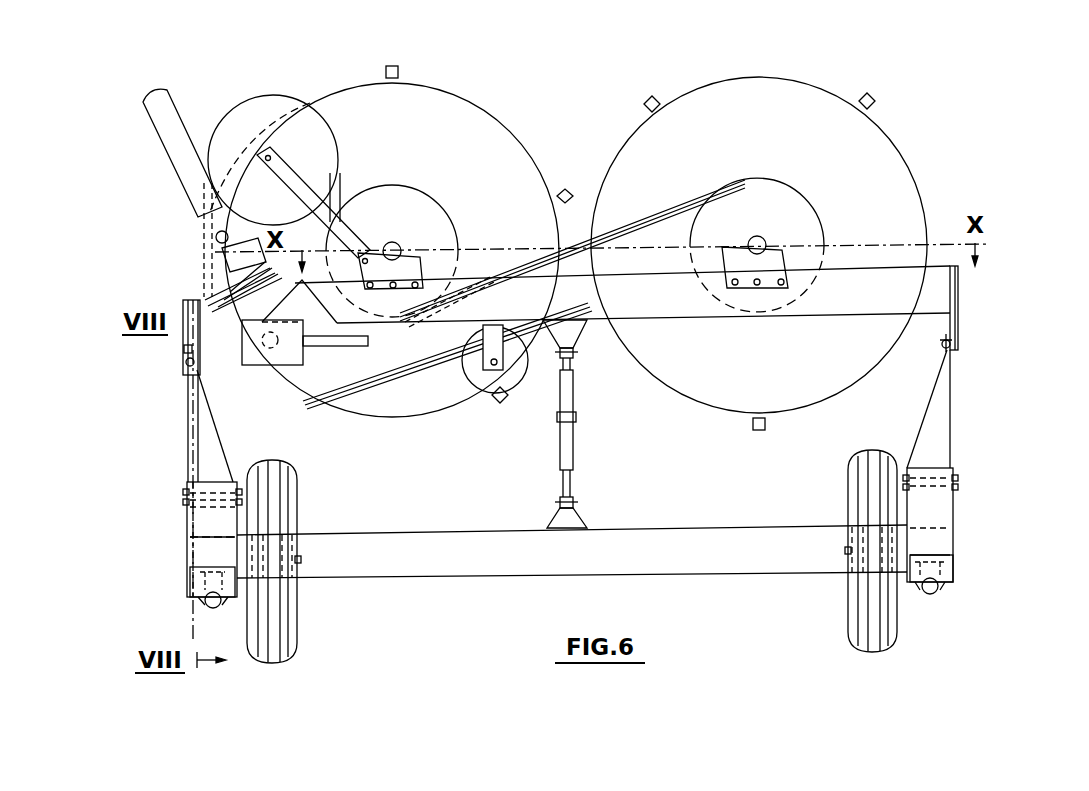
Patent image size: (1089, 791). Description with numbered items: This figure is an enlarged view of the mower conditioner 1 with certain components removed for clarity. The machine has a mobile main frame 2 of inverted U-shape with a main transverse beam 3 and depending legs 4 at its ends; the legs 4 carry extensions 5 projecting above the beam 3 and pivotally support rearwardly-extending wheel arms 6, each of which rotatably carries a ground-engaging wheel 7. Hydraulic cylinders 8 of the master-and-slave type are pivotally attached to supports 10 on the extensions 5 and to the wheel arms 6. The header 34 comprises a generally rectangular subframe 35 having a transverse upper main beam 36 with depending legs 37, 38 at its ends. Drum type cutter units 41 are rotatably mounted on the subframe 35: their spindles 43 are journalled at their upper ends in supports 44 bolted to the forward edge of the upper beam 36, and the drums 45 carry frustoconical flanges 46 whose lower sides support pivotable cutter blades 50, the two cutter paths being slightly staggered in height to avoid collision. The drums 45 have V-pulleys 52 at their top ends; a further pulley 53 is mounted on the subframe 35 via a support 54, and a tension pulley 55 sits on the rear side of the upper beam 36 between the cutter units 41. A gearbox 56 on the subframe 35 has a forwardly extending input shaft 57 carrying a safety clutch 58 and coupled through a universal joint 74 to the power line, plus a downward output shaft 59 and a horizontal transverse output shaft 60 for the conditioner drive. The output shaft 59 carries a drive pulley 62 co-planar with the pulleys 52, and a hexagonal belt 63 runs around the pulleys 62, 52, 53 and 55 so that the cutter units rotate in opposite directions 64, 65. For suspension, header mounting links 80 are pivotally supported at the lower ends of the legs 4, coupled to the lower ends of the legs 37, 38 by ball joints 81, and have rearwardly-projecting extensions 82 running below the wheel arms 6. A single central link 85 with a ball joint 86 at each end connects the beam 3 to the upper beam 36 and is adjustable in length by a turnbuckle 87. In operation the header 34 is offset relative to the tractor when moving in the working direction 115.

The mower conditioner 1 is at (1004, 372).
The mobile main frame 2 is at (552, 580).
The main transverse beam 3 is at (632, 578).
The depending legs 4 is at (187, 507).
The extensions 5 is at (187, 590).
The wheel arms 6 is at (187, 540).
The ground-engaging wheel 7 is at (296, 640).
The hydraulic cylinders 8 is at (215, 607).
The supports 10 is at (200, 608).
The header 34 is at (936, 155).
The subframe 35 is at (960, 272).
The transverse upper main beam 36 is at (890, 314).
The depending leg 37 is at (184, 345).
The depending leg 38 is at (960, 306).
The drum type cutter units 41 is at (440, 225).
The spindles 43 is at (443, 203).
The supports 44 is at (420, 270).
The drums 45 is at (436, 212).
The frustoconical flanges 46 is at (478, 101).
The cutter blades 50 is at (398, 72).
The V-pulleys 52 is at (378, 182).
The further pulley 53 is at (288, 100).
The support 54 is at (300, 173).
The tension pulley 55 is at (480, 392).
The gearbox 56 is at (333, 403).
The input shaft 57 is at (198, 300).
The safety clutch 58 is at (200, 270).
The output shaft 59 is at (280, 368).
The output shaft 60 is at (395, 400).
The drive pulley 62 is at (298, 395).
The hexagonal belt 63 is at (433, 365).
The direction of rotation 64 is at (535, 222).
The direction of rotation 65 is at (614, 220).
The universal joint 74 is at (214, 234).
The header mounting links 80 is at (190, 408).
The ball joints 81 is at (190, 366).
The rearwardly-projecting extensions 82 is at (190, 565).
The central link 85 is at (576, 446).
The ball joints 86 is at (583, 352).
The turnbuckle 87 is at (578, 417).
The working direction 115 is at (572, 95).